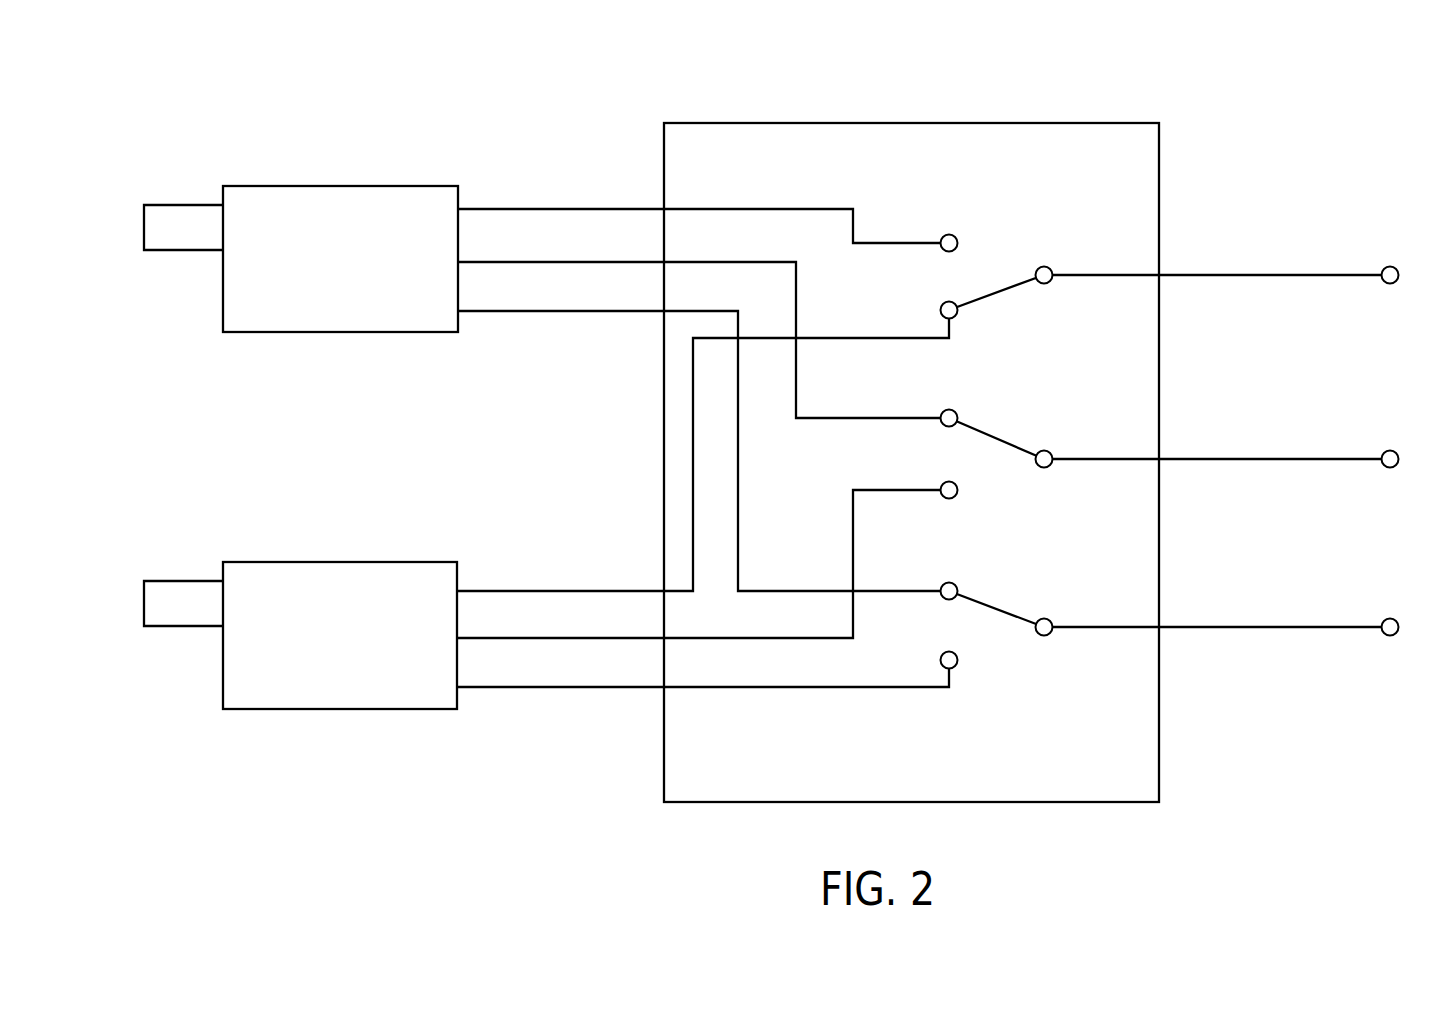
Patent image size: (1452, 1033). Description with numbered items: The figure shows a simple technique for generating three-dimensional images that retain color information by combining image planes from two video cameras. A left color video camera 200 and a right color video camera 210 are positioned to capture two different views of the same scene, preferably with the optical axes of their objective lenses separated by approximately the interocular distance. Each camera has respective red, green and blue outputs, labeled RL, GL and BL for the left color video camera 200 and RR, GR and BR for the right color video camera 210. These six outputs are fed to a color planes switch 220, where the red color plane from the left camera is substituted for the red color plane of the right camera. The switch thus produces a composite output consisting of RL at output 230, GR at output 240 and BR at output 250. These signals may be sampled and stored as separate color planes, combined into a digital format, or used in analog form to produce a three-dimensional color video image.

The left color video camera 200 is at (323, 562).
The right color video camera 210 is at (323, 186).
The color planes switch 220 is at (913, 123).
The output 230 is at (1396, 267).
The output 240 is at (1396, 451).
The output 250 is at (1396, 618).